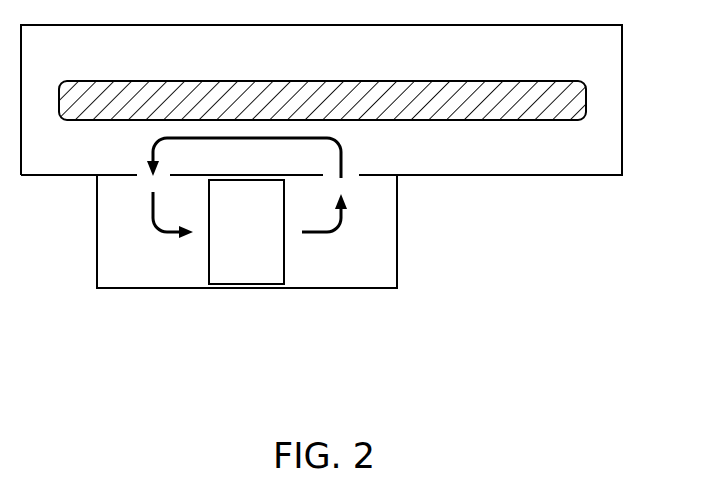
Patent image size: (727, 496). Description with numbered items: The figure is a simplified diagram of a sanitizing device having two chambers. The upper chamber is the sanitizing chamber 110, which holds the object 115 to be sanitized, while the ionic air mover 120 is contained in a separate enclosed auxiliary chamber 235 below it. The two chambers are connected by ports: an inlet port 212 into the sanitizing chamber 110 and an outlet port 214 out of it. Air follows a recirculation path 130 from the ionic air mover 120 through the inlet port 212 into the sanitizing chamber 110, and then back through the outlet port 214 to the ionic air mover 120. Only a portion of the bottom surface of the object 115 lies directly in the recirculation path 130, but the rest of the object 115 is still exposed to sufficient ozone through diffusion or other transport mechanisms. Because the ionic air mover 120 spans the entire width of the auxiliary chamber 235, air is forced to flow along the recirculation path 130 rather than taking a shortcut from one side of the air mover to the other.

The sanitizing chamber 110 is at (321, 100).
The object 115 is at (322, 100).
The ionic air mover 120 is at (246, 232).
The recirculation path 130 is at (330, 235).
The inlet port 212 is at (350, 177).
The outlet port 214 is at (145, 177).
The auxiliary chamber 235 is at (322, 288).